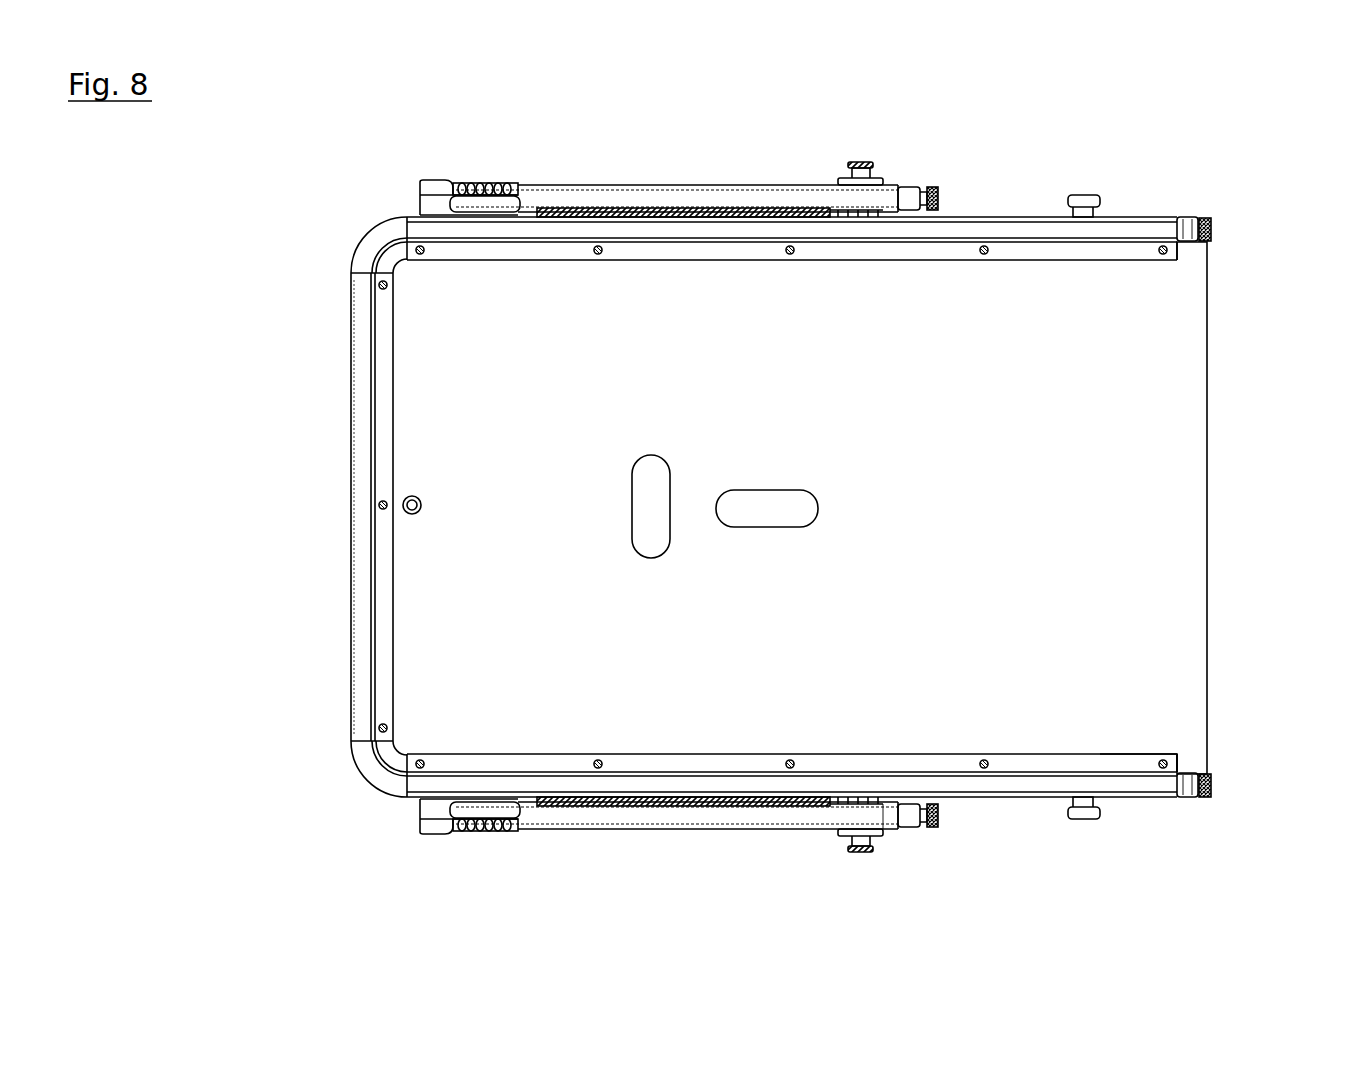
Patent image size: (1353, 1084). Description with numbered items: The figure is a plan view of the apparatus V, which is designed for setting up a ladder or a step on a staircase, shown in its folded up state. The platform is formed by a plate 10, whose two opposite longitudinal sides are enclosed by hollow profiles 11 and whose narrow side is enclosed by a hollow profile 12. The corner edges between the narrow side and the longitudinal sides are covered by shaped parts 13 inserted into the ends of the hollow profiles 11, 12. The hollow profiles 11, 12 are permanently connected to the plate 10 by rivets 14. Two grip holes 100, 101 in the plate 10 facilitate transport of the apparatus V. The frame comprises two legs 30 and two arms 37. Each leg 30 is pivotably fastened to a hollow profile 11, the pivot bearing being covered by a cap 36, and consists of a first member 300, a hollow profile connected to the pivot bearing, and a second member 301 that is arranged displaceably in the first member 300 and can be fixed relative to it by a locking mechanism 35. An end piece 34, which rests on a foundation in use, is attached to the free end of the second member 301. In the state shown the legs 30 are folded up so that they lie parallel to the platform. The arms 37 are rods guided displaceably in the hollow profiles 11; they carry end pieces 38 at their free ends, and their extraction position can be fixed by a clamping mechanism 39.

The plate 10 is at (1177, 472).
The hollow profile 11 is at (1032, 225).
The hollow profile 12 is at (361, 423).
The shaped part 13 is at (378, 238).
The rivet 14 is at (1170, 763).
The leg 30 is at (705, 200).
The first member 300 is at (603, 200).
The second member 301 is at (897, 835).
The end piece 34 is at (932, 188).
The locking mechanism 35 is at (853, 165).
The cap 36 is at (437, 188).
The arm 37 is at (1182, 222).
The end piece 38 is at (1210, 227).
The clamping mechanism 39 is at (1088, 197).
The grip hole 100 is at (652, 520).
The grip hole 101 is at (797, 505).
The apparatus V is at (1183, 187).